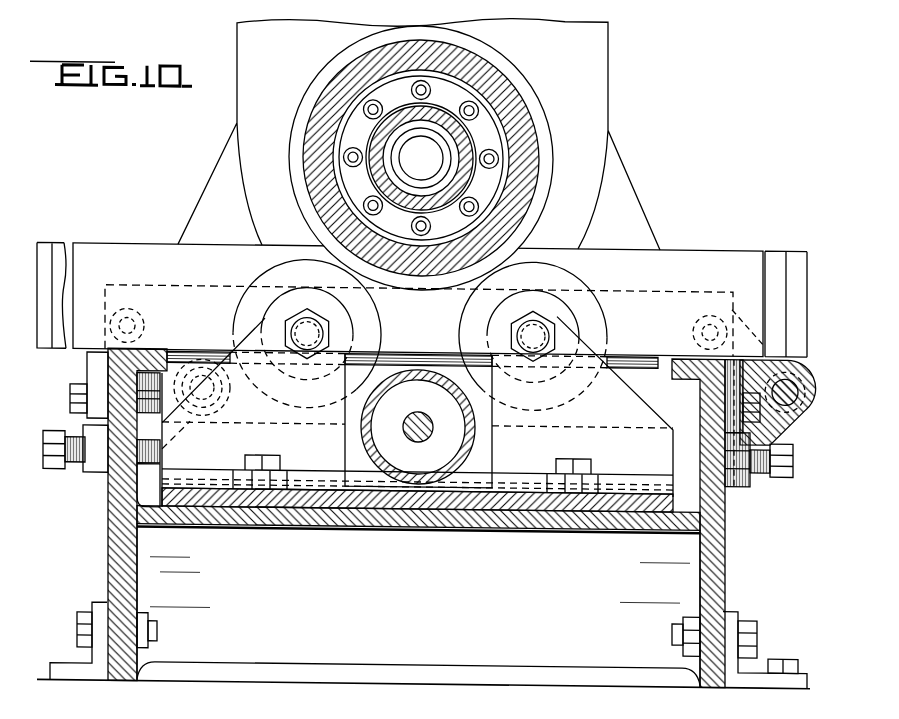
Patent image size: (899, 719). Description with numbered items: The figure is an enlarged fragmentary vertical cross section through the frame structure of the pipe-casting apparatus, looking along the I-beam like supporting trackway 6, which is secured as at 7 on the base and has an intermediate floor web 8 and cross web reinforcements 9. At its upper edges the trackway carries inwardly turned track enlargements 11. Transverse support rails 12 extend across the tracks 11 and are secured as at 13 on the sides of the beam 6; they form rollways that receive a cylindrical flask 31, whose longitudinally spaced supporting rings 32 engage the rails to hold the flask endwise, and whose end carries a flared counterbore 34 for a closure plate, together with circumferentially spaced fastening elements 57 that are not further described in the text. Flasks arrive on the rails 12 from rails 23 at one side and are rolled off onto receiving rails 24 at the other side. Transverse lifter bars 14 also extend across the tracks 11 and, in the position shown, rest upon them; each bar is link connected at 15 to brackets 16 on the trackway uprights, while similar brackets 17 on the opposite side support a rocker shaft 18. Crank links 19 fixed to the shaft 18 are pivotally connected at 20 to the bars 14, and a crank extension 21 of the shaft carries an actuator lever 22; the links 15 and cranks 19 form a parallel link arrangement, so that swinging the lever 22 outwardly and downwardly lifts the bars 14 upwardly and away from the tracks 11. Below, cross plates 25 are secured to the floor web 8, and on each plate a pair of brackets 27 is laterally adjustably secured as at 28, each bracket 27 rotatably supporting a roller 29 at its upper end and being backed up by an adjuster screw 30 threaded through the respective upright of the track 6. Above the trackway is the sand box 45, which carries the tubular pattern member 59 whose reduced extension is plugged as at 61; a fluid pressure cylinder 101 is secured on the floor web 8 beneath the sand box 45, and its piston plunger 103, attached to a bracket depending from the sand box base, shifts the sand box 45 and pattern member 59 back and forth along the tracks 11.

The I-beam like supporting trackway 6 is at (112, 569).
The securing means of trackway 7 is at (95, 643).
The intermediate floor web 8 is at (388, 523).
The cross web reinforcements 9 is at (600, 659).
The inwardly turned track enlargements 11 is at (155, 362).
The transverse support rails 12 is at (108, 255).
The securing means of support rails 13 is at (92, 376).
The transverse lifter bars 14 is at (233, 281).
The link connection 15 is at (155, 336).
The brackets 16 is at (207, 403).
The brackets 17 is at (778, 473).
The rocker shaft 18 is at (777, 397).
The crank links 19 is at (748, 326).
The pivotal connection 20 is at (702, 316).
The crank extension 21 is at (772, 412).
The actuator lever 22 is at (800, 247).
The rails 23 is at (44, 247).
The receiving rails 24 is at (786, 278).
The cross plates 25 is at (473, 493).
The brackets 27 is at (335, 386).
The adjustable securing means of brackets 28 is at (270, 459).
The roller 29 is at (298, 262).
The adjuster screw 30 is at (58, 465).
The flask 31 is at (510, 90).
The supporting rings 32 is at (542, 112).
The flared counterbore 34 is at (473, 85).
The sand box 45 is at (607, 80).
The bolt 57 is at (468, 203).
The tubular pattern member 59 is at (420, 118).
The plug 61 is at (437, 153).
The fluid pressure cylinder 101 is at (427, 468).
The piston plunger 103 is at (435, 410).